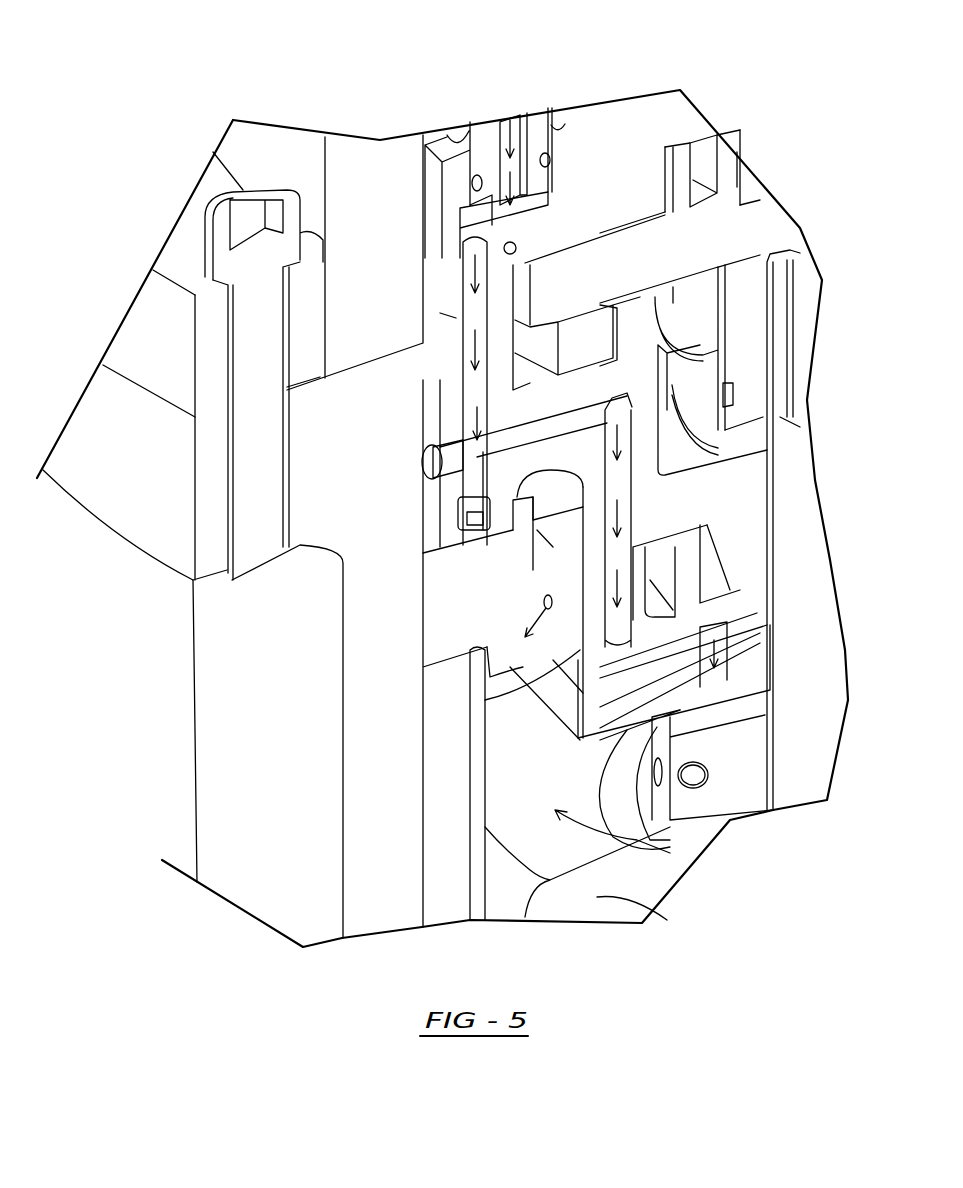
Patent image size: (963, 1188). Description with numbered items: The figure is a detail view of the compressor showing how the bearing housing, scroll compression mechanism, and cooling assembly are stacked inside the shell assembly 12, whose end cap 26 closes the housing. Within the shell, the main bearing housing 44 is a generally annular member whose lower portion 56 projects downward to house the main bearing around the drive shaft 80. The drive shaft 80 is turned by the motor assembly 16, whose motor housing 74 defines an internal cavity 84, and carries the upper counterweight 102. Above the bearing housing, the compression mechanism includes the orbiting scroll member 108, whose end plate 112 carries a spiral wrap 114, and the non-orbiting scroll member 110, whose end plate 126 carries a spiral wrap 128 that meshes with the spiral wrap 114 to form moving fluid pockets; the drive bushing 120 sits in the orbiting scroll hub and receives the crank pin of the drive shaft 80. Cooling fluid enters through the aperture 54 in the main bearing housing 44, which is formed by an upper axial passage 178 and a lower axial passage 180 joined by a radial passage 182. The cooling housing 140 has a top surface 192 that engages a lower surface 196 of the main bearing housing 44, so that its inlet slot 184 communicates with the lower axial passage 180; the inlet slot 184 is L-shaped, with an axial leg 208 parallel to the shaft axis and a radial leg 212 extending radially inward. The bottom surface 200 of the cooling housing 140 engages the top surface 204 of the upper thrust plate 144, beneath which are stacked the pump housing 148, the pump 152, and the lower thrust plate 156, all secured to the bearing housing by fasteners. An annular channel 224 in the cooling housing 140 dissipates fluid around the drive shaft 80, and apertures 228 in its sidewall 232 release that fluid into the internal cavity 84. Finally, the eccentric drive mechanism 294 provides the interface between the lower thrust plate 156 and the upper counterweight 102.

The shell assembly 12 is at (107, 483).
The motor assembly 16 is at (650, 907).
The end cap 26 is at (357, 155).
The main bearing housing 44 is at (430, 387).
The aperture 54 is at (450, 323).
The lower portion 56 is at (765, 475).
The motor housing 74 is at (477, 905).
The drive shaft 80 is at (797, 783).
The internal cavity 84 is at (695, 840).
The upper counterweight 102 is at (727, 787).
The orbiting scroll member 108 is at (757, 213).
The non-orbiting scroll member 110 is at (680, 107).
The end plate 112 is at (660, 272).
The spiral wrap 114 is at (747, 178).
The drive bushing 120 is at (780, 327).
The end plate 126 is at (648, 165).
The spiral wrap 128 is at (727, 170).
The cooling housing 140 is at (688, 582).
The upper thrust plate 144 is at (680, 630).
The pump housing 148 is at (600, 712).
The pump 152 is at (743, 657).
The lower thrust plate 156 is at (723, 710).
The upper axial passage 178 is at (473, 298).
The lower axial passage 180 is at (630, 492).
The radial passage 182 is at (543, 425).
The inlet slot 184 is at (493, 700).
The top surface 192 is at (742, 477).
The lower surface 196 is at (530, 557).
The bottom surface 200 is at (582, 710).
The top surface 204 is at (582, 683).
The axial leg 208 is at (607, 587).
The radial leg 212 is at (700, 610).
The annular channel 224 is at (687, 530).
The apertures 228 is at (545, 600).
The sidewall 232 is at (557, 572).
The eccentric drive mechanism 294 is at (712, 717).